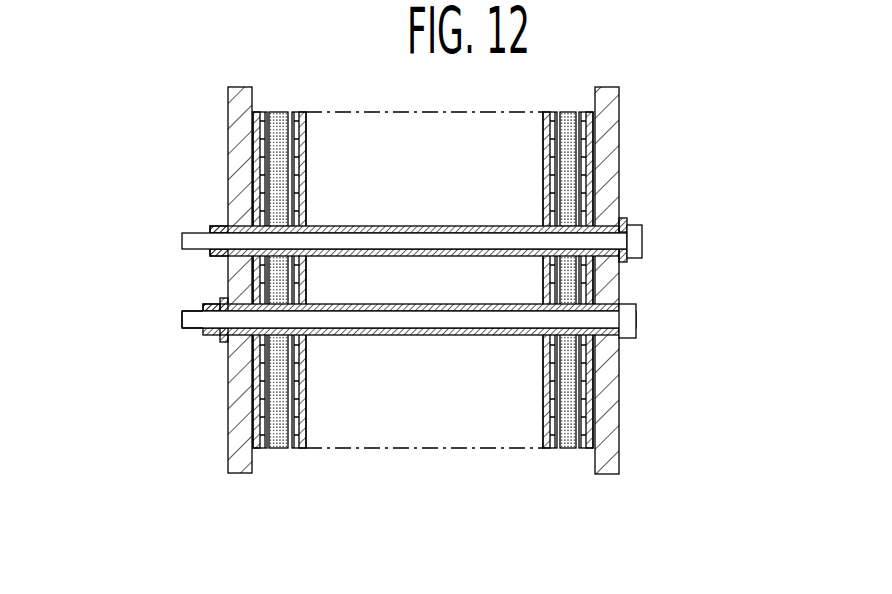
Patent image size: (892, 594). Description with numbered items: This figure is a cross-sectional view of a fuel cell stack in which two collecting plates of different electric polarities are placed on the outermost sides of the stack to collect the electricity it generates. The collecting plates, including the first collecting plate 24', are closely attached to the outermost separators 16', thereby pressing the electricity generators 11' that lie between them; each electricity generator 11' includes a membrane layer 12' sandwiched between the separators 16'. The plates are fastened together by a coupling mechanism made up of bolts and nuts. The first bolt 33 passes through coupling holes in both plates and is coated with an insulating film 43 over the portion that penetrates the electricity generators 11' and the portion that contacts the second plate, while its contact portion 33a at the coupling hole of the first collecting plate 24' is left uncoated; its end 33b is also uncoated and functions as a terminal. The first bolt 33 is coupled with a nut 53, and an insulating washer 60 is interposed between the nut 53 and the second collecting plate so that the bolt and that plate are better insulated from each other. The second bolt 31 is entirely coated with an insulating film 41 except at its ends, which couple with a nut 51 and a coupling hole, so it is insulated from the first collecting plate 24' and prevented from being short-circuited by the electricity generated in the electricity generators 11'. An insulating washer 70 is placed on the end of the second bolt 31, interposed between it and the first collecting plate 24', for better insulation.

The electricity generator 11' is at (414, 350).
The electrolyte membrane 12' is at (422, 327).
The separator 16' is at (416, 327).
The first collecting plate 24' is at (648, 280).
The second bolt 31 is at (635, 242).
The first bolt 33 is at (413, 348).
The contact portion 33a is at (612, 350).
The end of the first bolt 33b is at (190, 319).
The insulating film 41 is at (438, 226).
The insulating film 43 is at (438, 335).
The nut 51 is at (212, 227).
The nut 53 is at (205, 305).
The insulating washer 60 is at (222, 341).
The insulating washer 70 is at (624, 219).